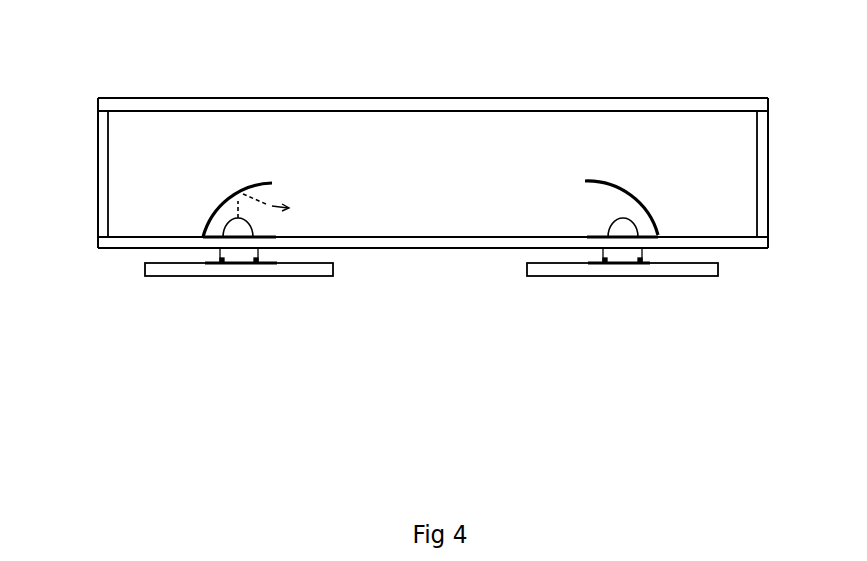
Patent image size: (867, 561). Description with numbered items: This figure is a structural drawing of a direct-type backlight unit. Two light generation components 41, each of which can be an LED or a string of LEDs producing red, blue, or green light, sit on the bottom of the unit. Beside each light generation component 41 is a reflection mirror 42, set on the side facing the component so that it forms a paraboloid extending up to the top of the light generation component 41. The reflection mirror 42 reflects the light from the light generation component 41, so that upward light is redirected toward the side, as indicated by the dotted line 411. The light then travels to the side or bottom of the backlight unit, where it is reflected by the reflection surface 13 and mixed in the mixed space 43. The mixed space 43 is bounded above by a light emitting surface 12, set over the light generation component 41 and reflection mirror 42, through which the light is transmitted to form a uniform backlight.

The light emitting surface 12 is at (415, 110).
The reflection surface 13 is at (100, 173).
The light generation component 41 is at (239, 218).
The dotted line 411 is at (265, 203).
The reflection mirror 42 is at (254, 183).
The mixed space 43 is at (408, 170).